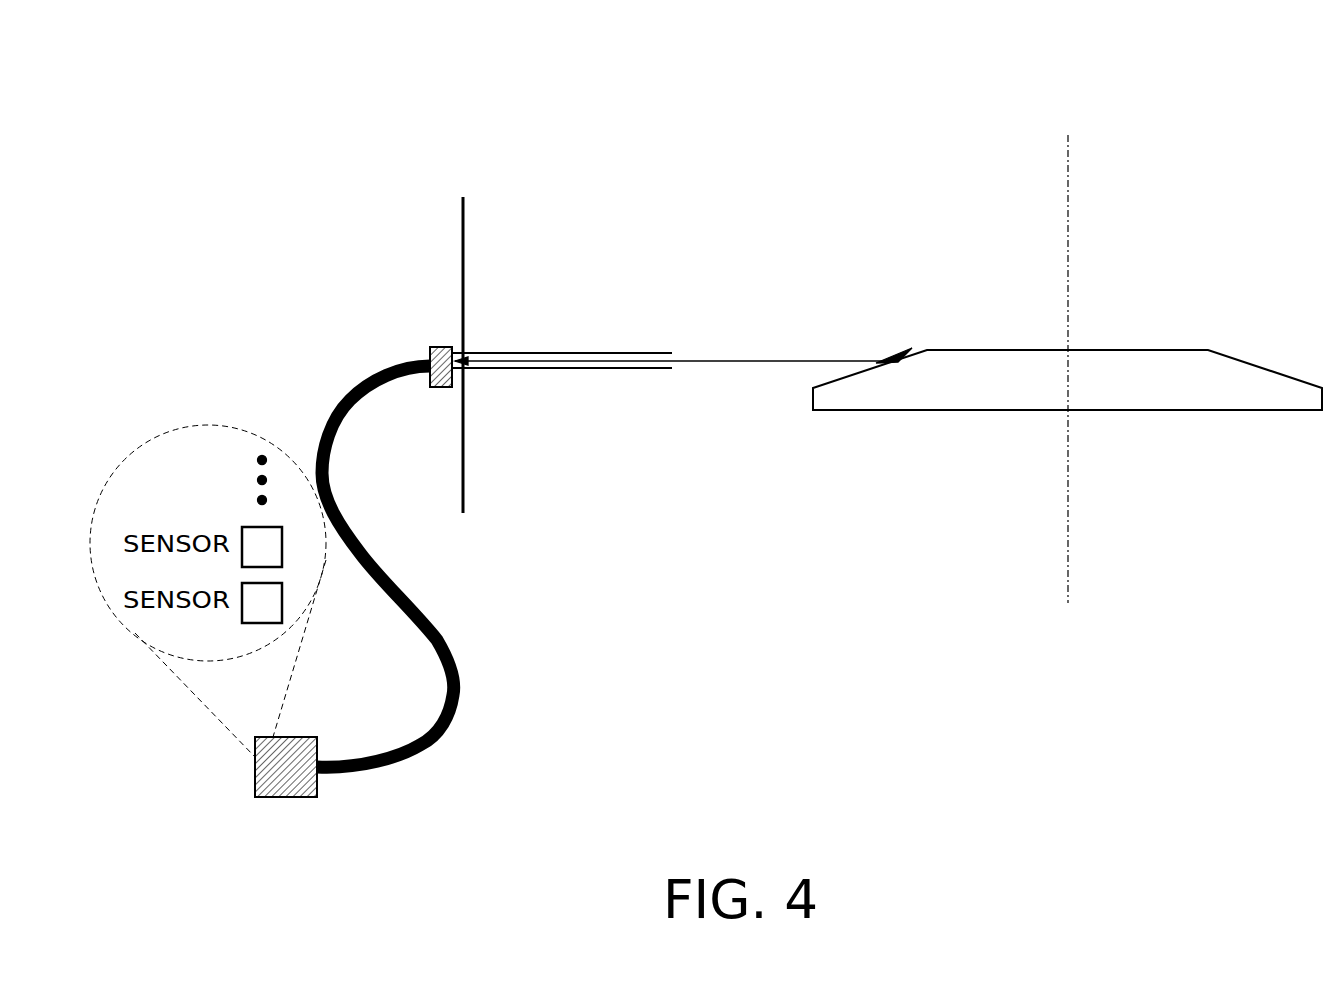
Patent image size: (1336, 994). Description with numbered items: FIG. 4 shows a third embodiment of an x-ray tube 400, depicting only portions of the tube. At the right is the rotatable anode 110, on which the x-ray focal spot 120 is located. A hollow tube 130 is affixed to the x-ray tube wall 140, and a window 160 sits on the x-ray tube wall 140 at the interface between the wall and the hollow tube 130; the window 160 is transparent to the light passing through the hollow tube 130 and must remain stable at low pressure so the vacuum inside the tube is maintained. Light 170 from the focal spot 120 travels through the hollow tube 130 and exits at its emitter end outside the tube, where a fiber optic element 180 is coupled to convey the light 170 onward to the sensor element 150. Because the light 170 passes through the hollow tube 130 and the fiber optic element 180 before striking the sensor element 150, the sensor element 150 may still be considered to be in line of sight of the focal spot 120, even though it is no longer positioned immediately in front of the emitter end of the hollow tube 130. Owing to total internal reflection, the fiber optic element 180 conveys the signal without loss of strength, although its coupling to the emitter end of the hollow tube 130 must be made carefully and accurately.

The x-ray tube 400 is at (970, 107).
The rotatable anode 110 is at (1155, 350).
The x-ray focal spot 120 is at (897, 352).
The hollow tube 130 is at (597, 352).
The x-ray tube wall 140 is at (467, 224).
The sensor element 150 is at (283, 798).
The window 160 is at (438, 345).
The light 170 is at (760, 360).
The fiber optic element 180 is at (463, 690).